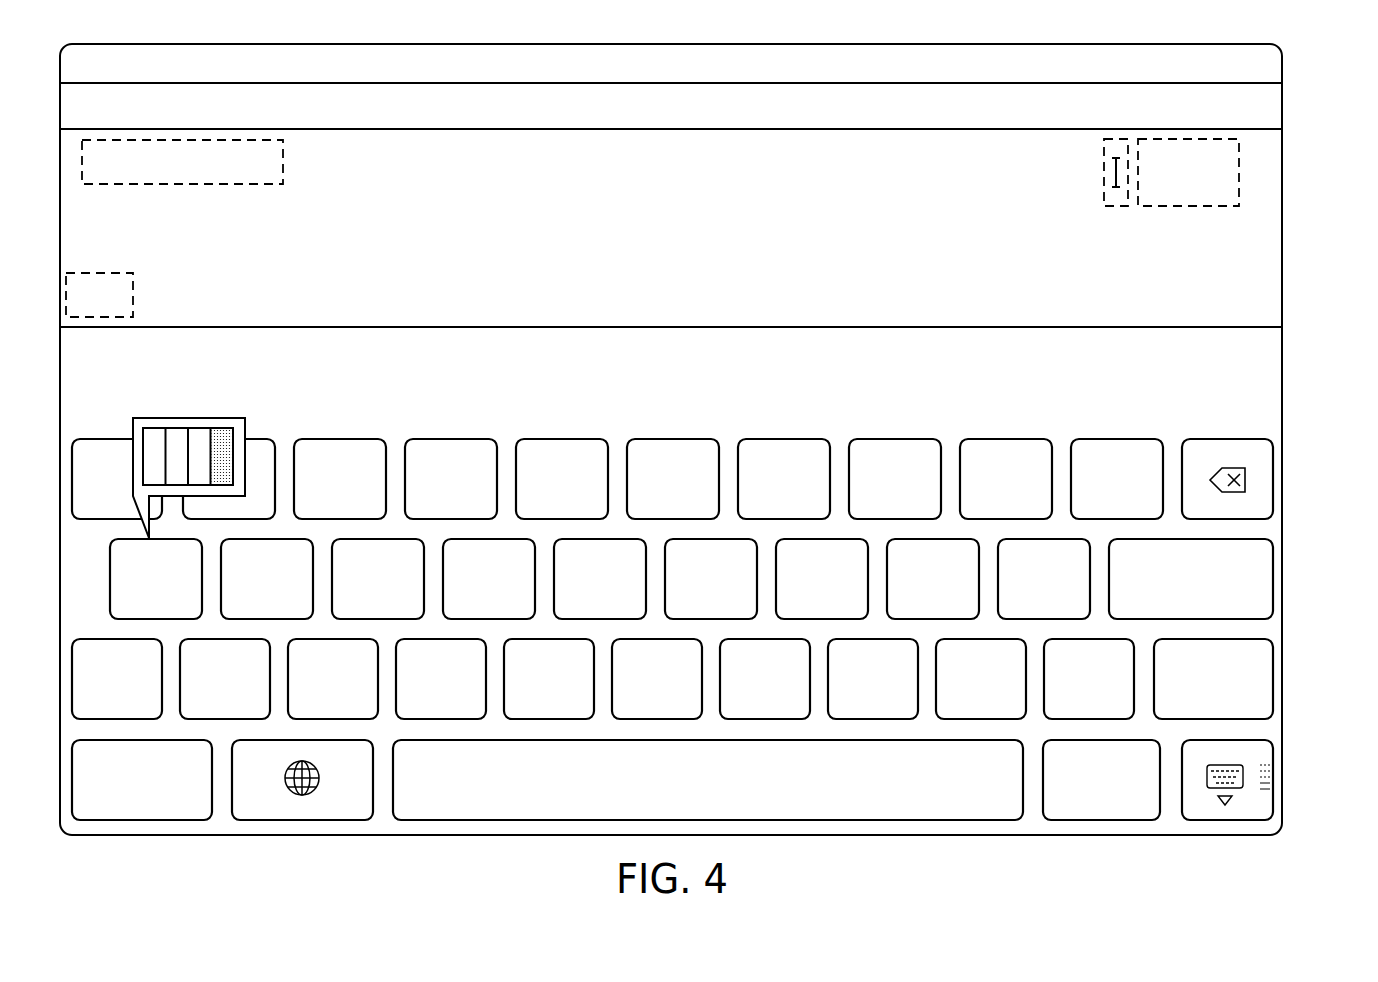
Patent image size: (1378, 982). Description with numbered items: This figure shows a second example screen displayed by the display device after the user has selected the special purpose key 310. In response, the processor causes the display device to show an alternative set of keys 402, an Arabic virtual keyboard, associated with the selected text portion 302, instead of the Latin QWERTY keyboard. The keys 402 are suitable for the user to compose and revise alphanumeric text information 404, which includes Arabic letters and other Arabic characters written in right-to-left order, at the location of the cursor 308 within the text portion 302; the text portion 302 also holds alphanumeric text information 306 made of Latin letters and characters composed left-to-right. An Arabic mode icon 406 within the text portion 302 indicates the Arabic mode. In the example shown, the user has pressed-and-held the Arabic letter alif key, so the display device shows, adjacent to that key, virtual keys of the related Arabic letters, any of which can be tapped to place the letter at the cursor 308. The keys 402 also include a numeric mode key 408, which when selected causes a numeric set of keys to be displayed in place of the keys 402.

The text portion 302 is at (692, 243).
The alphanumeric text information 306 is at (172, 185).
The cursor 308 is at (1113, 206).
The special purpose key 310 is at (303, 812).
The alternative set of keys 402 is at (708, 651).
The alphanumeric text information 404 is at (1195, 206).
The Arabic mode icon 406 is at (133, 285).
The numeric mode key 408 is at (142, 812).